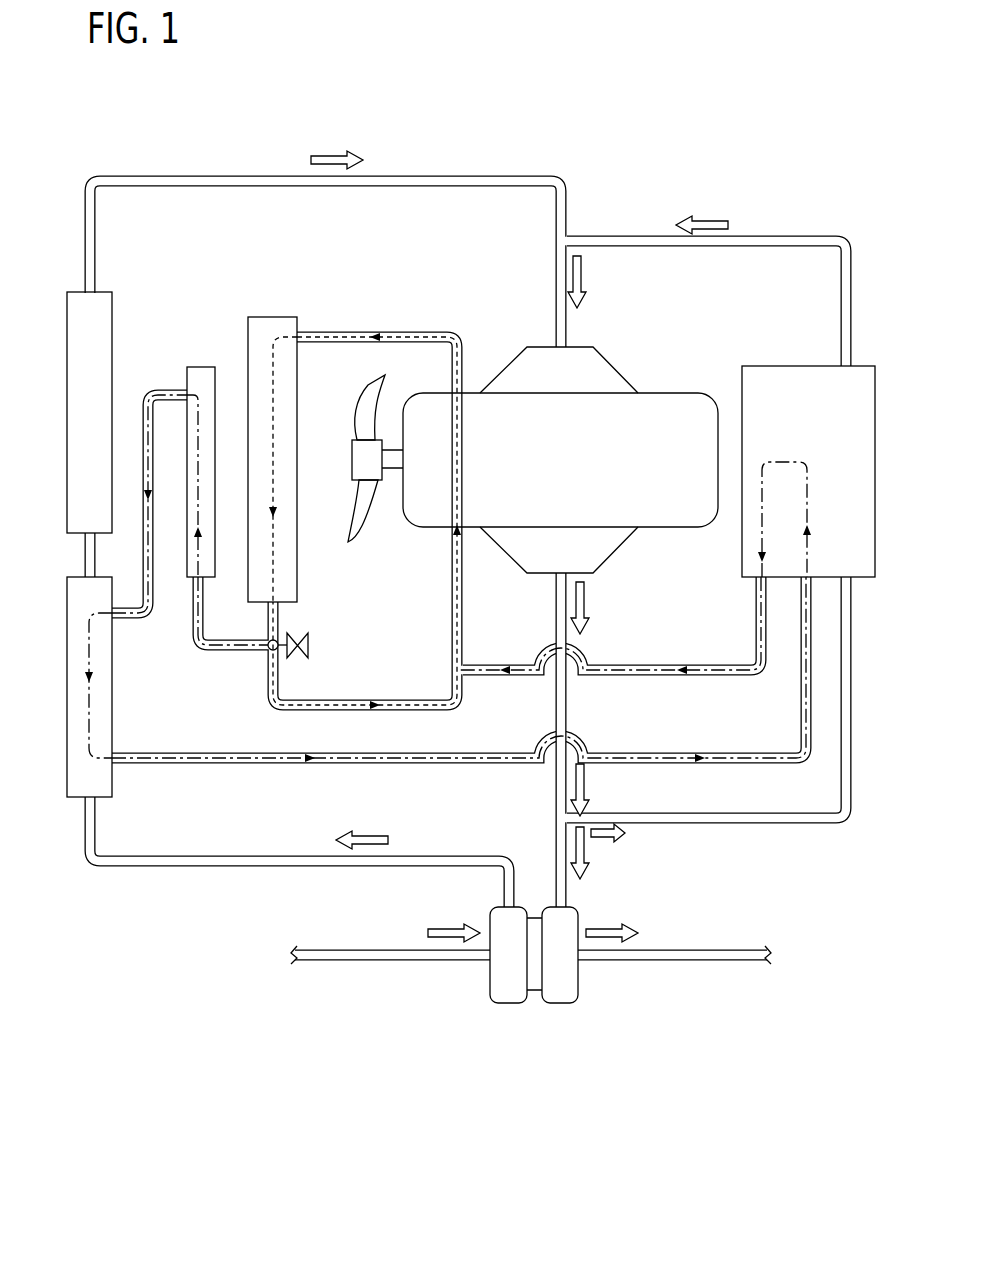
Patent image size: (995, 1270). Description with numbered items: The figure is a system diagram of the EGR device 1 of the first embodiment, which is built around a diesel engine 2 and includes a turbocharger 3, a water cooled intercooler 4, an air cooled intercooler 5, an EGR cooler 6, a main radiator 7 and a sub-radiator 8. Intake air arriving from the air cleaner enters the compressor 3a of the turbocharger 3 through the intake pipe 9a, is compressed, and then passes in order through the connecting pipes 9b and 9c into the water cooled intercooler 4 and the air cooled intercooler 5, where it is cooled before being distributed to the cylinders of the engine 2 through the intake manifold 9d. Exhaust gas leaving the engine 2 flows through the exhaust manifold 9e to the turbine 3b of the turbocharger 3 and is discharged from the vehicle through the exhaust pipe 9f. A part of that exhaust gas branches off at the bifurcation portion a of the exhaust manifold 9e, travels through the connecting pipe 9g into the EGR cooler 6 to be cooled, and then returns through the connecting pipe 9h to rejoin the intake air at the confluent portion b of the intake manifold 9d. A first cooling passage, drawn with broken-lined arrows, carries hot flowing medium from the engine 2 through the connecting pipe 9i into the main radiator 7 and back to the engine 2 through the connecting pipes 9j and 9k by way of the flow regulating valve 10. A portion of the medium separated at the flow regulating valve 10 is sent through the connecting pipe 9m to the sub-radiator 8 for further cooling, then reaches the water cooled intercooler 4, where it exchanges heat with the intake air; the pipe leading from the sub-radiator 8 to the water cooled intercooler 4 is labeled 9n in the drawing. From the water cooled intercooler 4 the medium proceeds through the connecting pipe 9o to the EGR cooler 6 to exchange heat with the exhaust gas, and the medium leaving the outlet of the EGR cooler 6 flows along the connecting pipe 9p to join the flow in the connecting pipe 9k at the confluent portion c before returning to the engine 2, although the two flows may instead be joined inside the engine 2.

The EGR device 1 is at (393, 166).
The diesel engine 2 is at (679, 392).
The turbocharger 3 is at (537, 1012).
The compressor 3a is at (510, 1003).
The turbine 3b is at (558, 1003).
The water cooled intercooler 4 is at (65, 687).
The air cooled intercooler 5 is at (66, 413).
The EGR cooler 6 is at (818, 365).
The main radiator 7 is at (273, 317).
The sub-radiator 8 is at (202, 367).
The intake pipe 9a is at (347, 962).
The connecting pipe 9b is at (200, 868).
The connecting pipe 9c is at (81, 556).
The intake manifold 9d is at (262, 175).
The exhaust manifold 9e is at (555, 623).
The exhaust pipe 9f is at (702, 962).
The connecting pipe 9g is at (702, 824).
The connecting pipe 9h is at (753, 237).
The connecting pipe 9i is at (431, 332).
The connecting pipe 9j is at (279, 609).
The connecting pipe 9k is at (450, 575).
The connecting pipe 9m is at (200, 650).
The oil pipe 9n is at (138, 618).
The connecting pipe 9o is at (200, 765).
The connecting pipe 9p is at (672, 664).
The flow regulating valve 10 is at (279, 655).
The bifurcation portion a is at (558, 816).
The confluent portion b is at (555, 235).
The confluent portion c is at (461, 672).